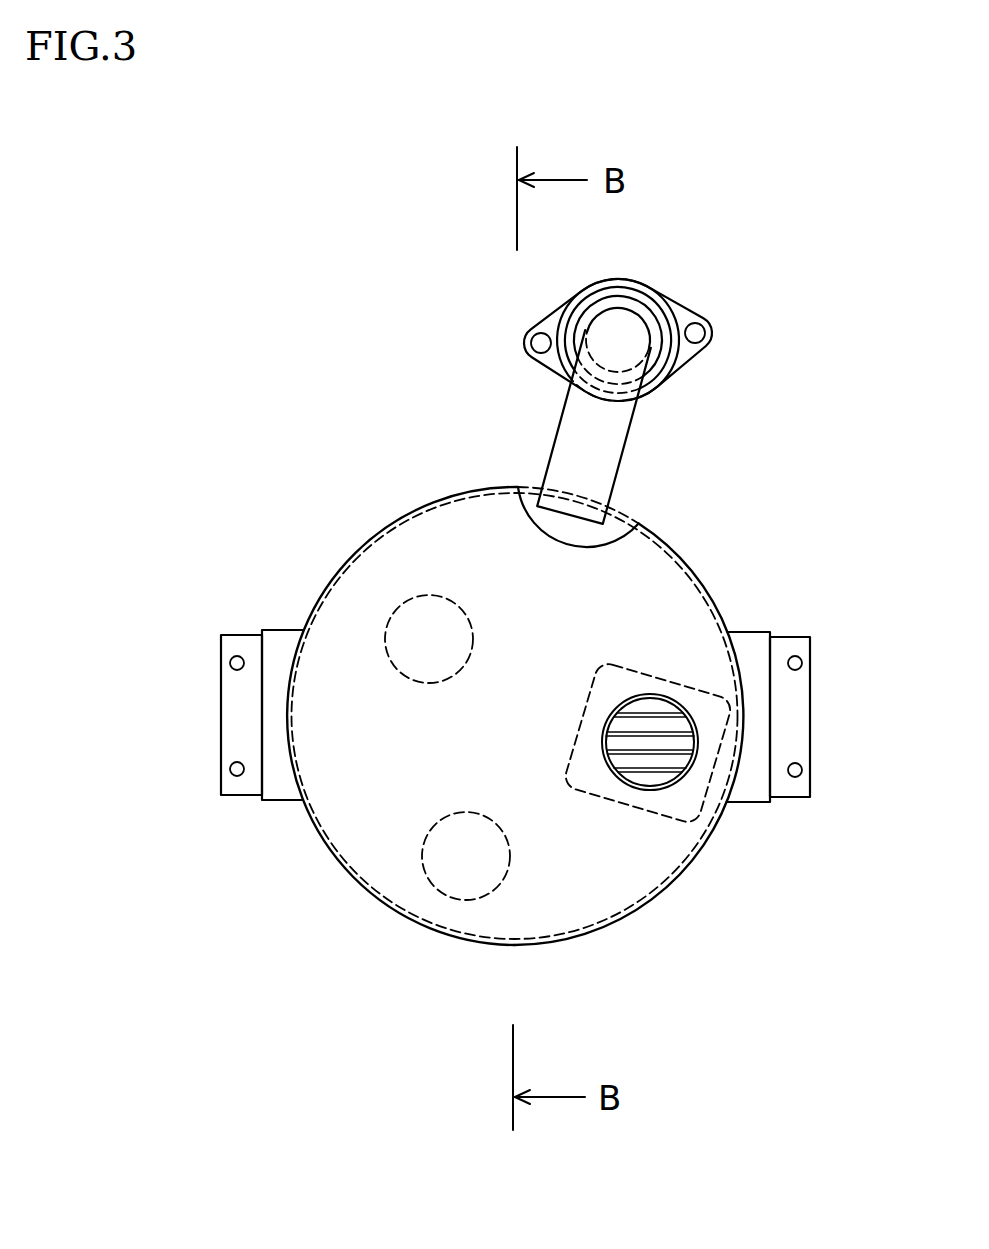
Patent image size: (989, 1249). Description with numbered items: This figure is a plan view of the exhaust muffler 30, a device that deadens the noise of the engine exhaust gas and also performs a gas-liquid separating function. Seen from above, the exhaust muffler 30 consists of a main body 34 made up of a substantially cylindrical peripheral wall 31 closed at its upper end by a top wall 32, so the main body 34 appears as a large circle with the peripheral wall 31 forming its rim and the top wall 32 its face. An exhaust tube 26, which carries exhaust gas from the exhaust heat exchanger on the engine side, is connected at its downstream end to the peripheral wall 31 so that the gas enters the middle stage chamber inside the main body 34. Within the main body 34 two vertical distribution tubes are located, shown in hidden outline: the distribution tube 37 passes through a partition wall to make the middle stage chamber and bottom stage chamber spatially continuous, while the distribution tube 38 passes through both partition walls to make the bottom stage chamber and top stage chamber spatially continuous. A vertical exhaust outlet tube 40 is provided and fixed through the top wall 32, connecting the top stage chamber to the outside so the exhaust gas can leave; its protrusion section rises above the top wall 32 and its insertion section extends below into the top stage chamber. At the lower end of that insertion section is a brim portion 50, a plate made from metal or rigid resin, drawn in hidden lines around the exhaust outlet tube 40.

The exhaust tube 26 is at (682, 450).
The exhaust muffler 30 is at (792, 482).
The peripheral wall 31 is at (700, 578).
The top wall 32 is at (647, 973).
The main body 34 is at (380, 533).
The distribution tube 37 is at (390, 617).
The distribution tube 38 is at (390, 983).
The exhaust outlet tube 40 is at (730, 888).
The brim portion 50 is at (790, 843).